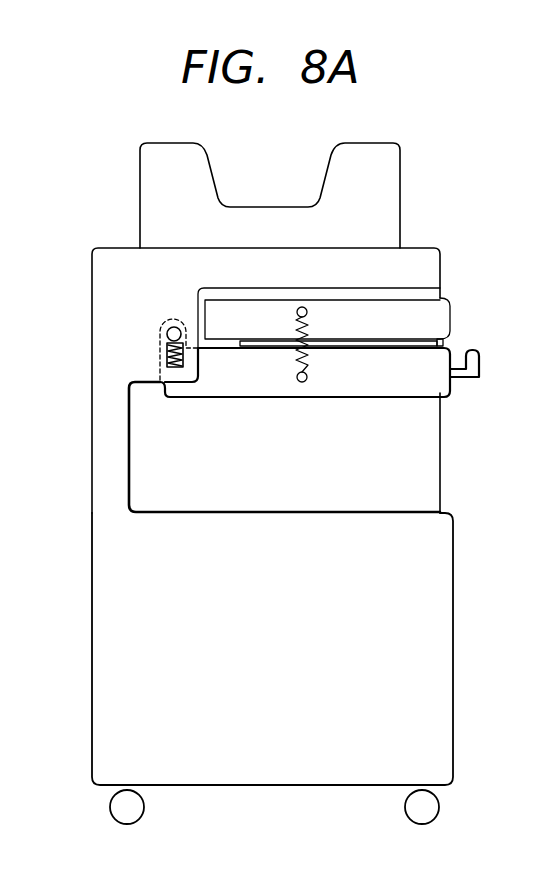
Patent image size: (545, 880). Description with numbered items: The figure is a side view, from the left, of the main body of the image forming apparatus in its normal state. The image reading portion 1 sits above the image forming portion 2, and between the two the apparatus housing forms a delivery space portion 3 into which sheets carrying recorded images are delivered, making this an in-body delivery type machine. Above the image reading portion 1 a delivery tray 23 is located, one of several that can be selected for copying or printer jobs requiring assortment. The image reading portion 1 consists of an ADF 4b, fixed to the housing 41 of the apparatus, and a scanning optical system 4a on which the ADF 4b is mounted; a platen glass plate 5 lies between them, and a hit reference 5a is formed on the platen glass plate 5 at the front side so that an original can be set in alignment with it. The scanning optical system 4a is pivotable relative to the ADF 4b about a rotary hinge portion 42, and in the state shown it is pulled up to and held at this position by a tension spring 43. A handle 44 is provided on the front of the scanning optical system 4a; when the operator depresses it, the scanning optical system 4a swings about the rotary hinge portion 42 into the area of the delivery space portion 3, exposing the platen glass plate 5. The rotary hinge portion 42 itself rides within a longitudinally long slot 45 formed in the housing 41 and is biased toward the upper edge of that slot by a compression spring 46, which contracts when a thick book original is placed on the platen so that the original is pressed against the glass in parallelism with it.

The image reading portion 1 is at (198, 385).
The image forming portion 2 is at (442, 609).
The delivery space portion 3 is at (152, 489).
The scanning optical system 4a is at (276, 383).
The ADF 4b is at (440, 310).
The platen glass plate 5 is at (348, 352).
The hit reference 5a is at (444, 343).
The delivery tray 23 is at (388, 153).
The housing 41 is at (103, 328).
The rotary hinge portion 42 is at (168, 330).
The tension spring 43 is at (305, 338).
The handle 44 is at (467, 370).
The longitudinally long slot 45 is at (172, 351).
The compression spring 46 is at (185, 352).